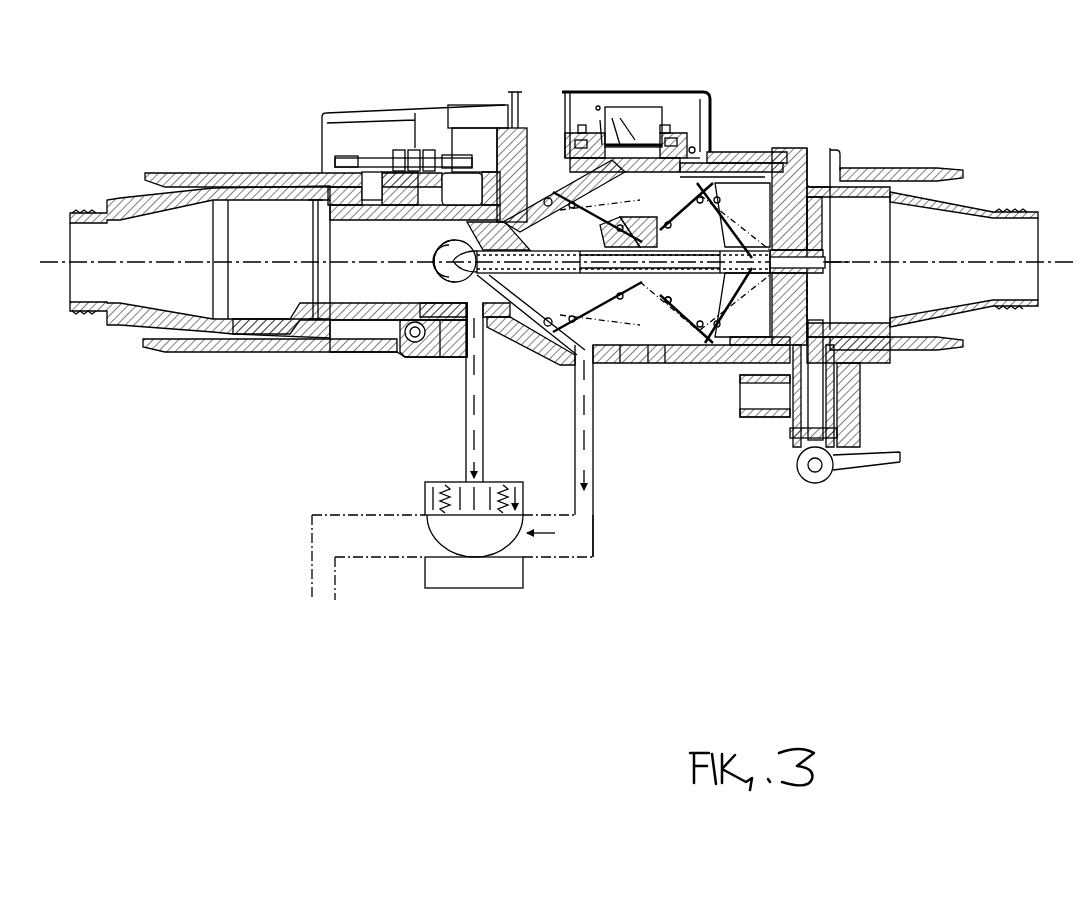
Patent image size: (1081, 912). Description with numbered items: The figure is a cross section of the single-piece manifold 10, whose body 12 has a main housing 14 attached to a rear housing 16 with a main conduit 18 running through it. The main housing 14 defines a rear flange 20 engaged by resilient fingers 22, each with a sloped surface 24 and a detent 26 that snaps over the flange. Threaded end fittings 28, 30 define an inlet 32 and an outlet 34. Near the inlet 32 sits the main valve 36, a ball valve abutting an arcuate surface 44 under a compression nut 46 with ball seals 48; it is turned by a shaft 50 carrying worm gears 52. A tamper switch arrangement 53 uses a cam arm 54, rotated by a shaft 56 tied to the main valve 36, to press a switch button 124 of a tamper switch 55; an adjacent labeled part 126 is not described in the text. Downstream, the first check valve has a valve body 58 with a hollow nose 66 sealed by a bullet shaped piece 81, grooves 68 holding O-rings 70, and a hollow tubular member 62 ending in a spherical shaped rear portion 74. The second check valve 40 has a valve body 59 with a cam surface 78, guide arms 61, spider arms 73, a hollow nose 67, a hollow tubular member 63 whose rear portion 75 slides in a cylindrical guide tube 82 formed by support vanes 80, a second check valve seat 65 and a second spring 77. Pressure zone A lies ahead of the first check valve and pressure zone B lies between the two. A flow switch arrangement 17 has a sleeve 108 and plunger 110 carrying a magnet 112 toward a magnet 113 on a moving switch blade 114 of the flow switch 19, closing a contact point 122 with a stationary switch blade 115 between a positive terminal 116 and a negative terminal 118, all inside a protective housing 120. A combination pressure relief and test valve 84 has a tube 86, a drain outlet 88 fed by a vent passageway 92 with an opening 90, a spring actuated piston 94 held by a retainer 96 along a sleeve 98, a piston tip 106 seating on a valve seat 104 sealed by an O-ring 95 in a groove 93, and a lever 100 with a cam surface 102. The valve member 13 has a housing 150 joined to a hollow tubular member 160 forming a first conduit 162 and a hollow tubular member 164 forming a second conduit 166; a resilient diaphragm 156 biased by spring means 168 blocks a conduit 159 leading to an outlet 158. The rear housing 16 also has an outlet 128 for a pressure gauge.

The single-piece manifold 10 is at (806, 82).
The body 12 is at (658, 415).
The valve member 13 is at (520, 643).
The main housing 14 is at (233, 173).
The rear housing 16 is at (840, 150).
The flow switch arrangement 17 is at (642, 106).
The main conduit 18 is at (462, 350).
The flow switch 19 is at (600, 120).
The rear flange 20 is at (712, 160).
The resilient fingers 22 is at (775, 148).
The sloped surface 24 is at (725, 165).
The detent 26 is at (815, 150).
The end fitting 28 is at (86, 213).
The end fitting 30 is at (1010, 208).
The inlet 32 is at (68, 310).
The outlet 34 is at (1026, 293).
The main valve 36 is at (252, 352).
The second check valve 40 is at (645, 363).
The arcuate surface 44 is at (352, 352).
The compression nut 46 is at (302, 352).
The ball seals 48 is at (382, 283).
The shaft 50 is at (432, 352).
The worm gears 52 is at (405, 352).
The tamper switch arrangement 53 is at (385, 157).
The cam arm 54 is at (365, 154).
The tamper switch 55 is at (444, 131).
The shaft 56 is at (308, 229).
The valve body 58 is at (500, 180).
The valve body 59 is at (620, 363).
The guide arms 61 is at (700, 385).
The hollow tubular member 62 is at (593, 262).
The hollow tubular member 63 is at (730, 363).
The second check valve seat 65 is at (685, 363).
The hollow nose 66 is at (436, 250).
The hollow nose 67 is at (623, 245).
The grooves 68 is at (514, 90).
The O-rings 70 is at (495, 125).
The spider arms 73 is at (697, 307).
The spherical shaped rear portion 74 is at (630, 300).
The rear portion 75 is at (843, 268).
The second spring 77 is at (580, 228).
The cam surface 78 is at (715, 263).
The support vanes 80 is at (795, 236).
The bullet shaped piece 81 is at (440, 262).
The cylindrical guide tube 82 is at (822, 255).
The combination pressure relief and test valve 84 is at (870, 412).
The tube 86 is at (835, 385).
The outlet 88 is at (770, 419).
The opening 90 is at (531, 341).
The vent passageway 92 is at (663, 363).
The groove 93 is at (865, 300).
The spring actuated piston 94 is at (862, 366).
The O-ring 95 is at (900, 325).
The retainer 96 is at (860, 430).
The sleeve 98 is at (882, 405).
The lever 100 is at (898, 462).
The cam surface 102 is at (830, 475).
The valve seat 104 is at (820, 300).
The piston tip 106 is at (963, 344).
The sleeve 108 is at (742, 212).
The plunger 110 is at (622, 120).
The magnet 112 is at (598, 106).
The magnet 113 is at (665, 125).
The conductive moving switch blade 114 is at (612, 118).
The conductive stationary switch blade 115 is at (672, 138).
The positive terminal 116 is at (580, 125).
The negative terminal 118 is at (694, 148).
The protective housing 120 is at (578, 140).
The contact point 122 is at (700, 155).
The switch button 124 is at (440, 135).
The housing wall 126 is at (328, 123).
The outlet 128 is at (838, 150).
The housing 150 is at (428, 588).
The resilient diaphragm 156 is at (492, 540).
The outlet 158 is at (323, 598).
The conduit 159 is at (343, 530).
The hollow tubular member 160 is at (485, 460).
The first conduit 162 is at (464, 465).
The hollow tubular member 164 is at (595, 551).
The second conduit 166 is at (571, 533).
The spring means 168 is at (424, 493).
The pressure zone A is at (468, 290).
The pressure zone B is at (587, 328).